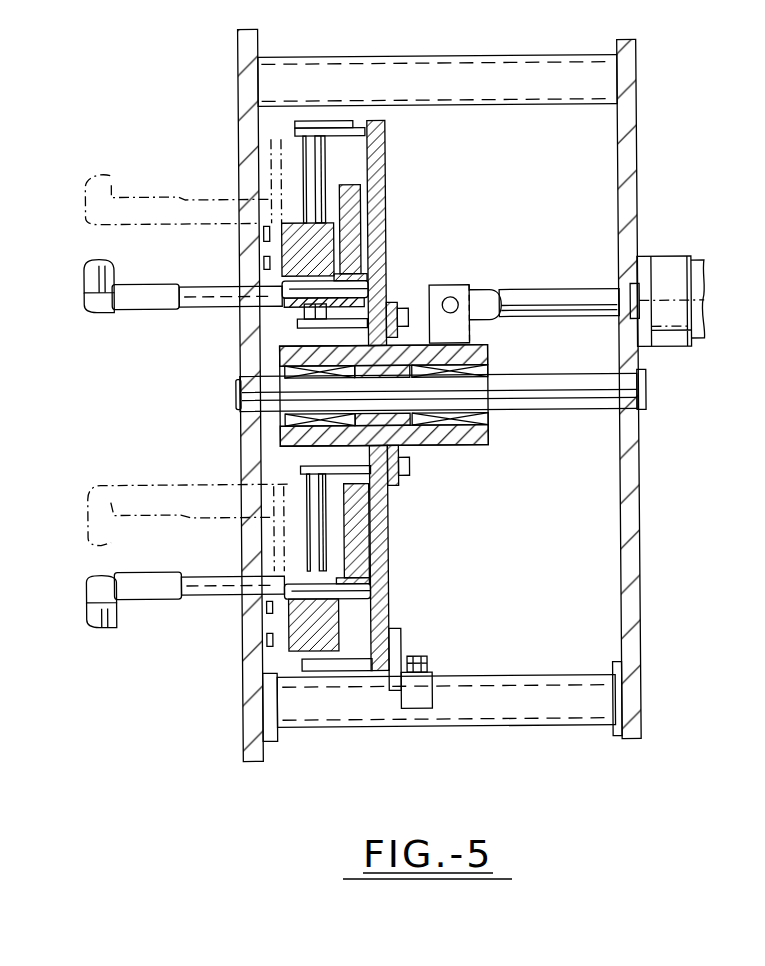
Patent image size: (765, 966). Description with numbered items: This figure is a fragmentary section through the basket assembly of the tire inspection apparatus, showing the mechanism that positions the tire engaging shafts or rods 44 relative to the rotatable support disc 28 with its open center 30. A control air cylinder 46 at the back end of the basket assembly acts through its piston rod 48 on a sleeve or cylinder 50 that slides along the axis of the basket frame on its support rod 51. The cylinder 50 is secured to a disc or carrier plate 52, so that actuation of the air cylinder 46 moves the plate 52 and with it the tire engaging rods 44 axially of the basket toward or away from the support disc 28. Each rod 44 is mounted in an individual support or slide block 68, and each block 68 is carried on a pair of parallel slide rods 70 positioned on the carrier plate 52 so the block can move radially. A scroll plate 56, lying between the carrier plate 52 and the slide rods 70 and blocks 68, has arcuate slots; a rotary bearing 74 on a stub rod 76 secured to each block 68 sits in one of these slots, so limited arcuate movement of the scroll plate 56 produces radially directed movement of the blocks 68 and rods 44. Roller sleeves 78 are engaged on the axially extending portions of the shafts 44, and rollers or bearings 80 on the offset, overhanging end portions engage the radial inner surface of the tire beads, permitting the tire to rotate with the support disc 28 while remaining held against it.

The support disc 28 is at (243, 705).
The open center 30 is at (240, 160).
The tire engaging shafts or rods 44 is at (222, 309).
The control air cylinder 46 is at (673, 259).
The piston rod 48 is at (558, 297).
The sleeve or cylinder 50 is at (457, 446).
The support rod 51 is at (540, 410).
The disc or plate (carrier plate) 52 is at (388, 516).
The scroll plate 56 is at (356, 207).
The support blocks (slide blocks) 68 is at (295, 253).
The slide rod 70 is at (312, 185).
The rotary bearing 74 is at (340, 274).
The stub rod 76 is at (342, 289).
The roller sleeves 78 is at (118, 312).
The rollers or bearings 80 is at (93, 278).